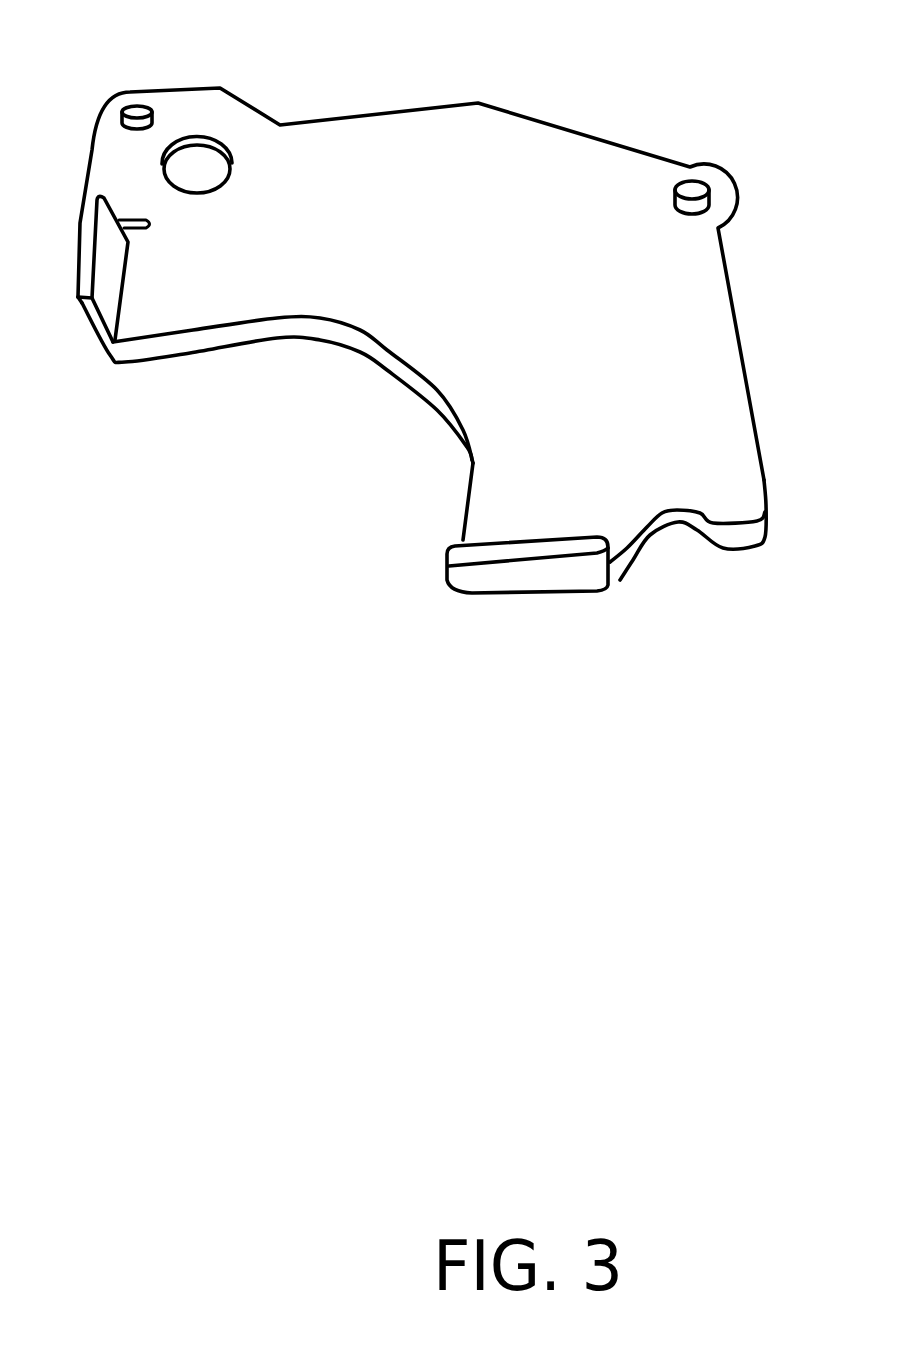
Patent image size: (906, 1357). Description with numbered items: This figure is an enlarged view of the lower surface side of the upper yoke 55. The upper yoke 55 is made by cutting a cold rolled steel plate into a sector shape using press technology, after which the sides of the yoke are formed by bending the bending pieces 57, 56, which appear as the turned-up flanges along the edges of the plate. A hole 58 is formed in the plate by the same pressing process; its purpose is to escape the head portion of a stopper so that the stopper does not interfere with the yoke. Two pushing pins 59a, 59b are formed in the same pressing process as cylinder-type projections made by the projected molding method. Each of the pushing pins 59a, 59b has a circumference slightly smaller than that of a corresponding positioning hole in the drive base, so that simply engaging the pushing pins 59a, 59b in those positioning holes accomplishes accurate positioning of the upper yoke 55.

The upper yoke 55 is at (560, 155).
The bending piece 56 is at (95, 328).
The bending piece 57 is at (455, 580).
The hole 58 is at (210, 158).
The pushing pin 59a is at (693, 187).
The pushing pin 59b is at (138, 105).